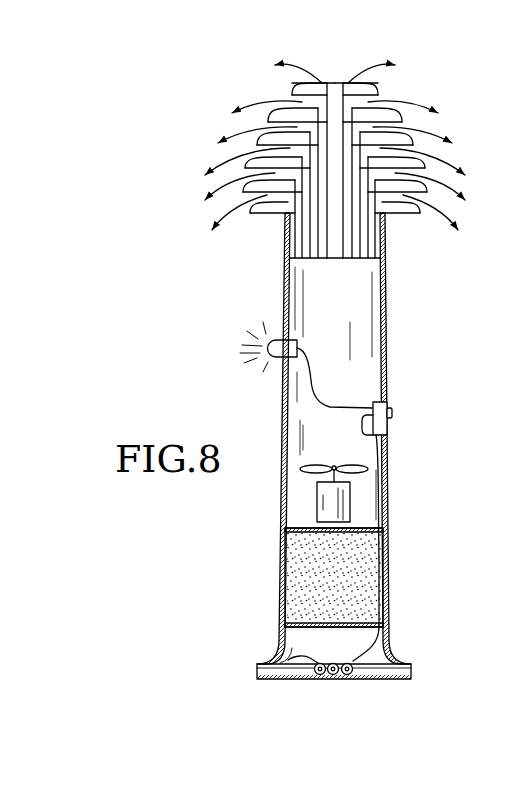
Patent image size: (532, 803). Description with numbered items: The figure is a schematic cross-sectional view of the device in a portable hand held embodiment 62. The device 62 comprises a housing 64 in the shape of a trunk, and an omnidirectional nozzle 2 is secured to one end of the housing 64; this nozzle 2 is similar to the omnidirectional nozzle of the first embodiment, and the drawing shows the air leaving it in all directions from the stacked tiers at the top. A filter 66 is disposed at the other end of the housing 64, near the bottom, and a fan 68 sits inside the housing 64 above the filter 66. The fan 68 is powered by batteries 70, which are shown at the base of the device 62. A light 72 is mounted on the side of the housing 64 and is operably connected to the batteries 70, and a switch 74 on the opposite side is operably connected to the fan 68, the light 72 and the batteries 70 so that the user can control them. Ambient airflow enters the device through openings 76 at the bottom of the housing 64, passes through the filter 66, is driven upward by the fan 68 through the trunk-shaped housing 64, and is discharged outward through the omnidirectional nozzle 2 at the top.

The omnidirectional nozzle 2 is at (424, 66).
The portable hand held embodiment 62 is at (441, 308).
The housing 64 is at (388, 367).
The filter 66 is at (372, 580).
The fan 68 is at (347, 500).
The batteries 70 is at (357, 673).
The light 72 is at (262, 351).
The switch 74 is at (393, 407).
The openings 76 is at (257, 668).